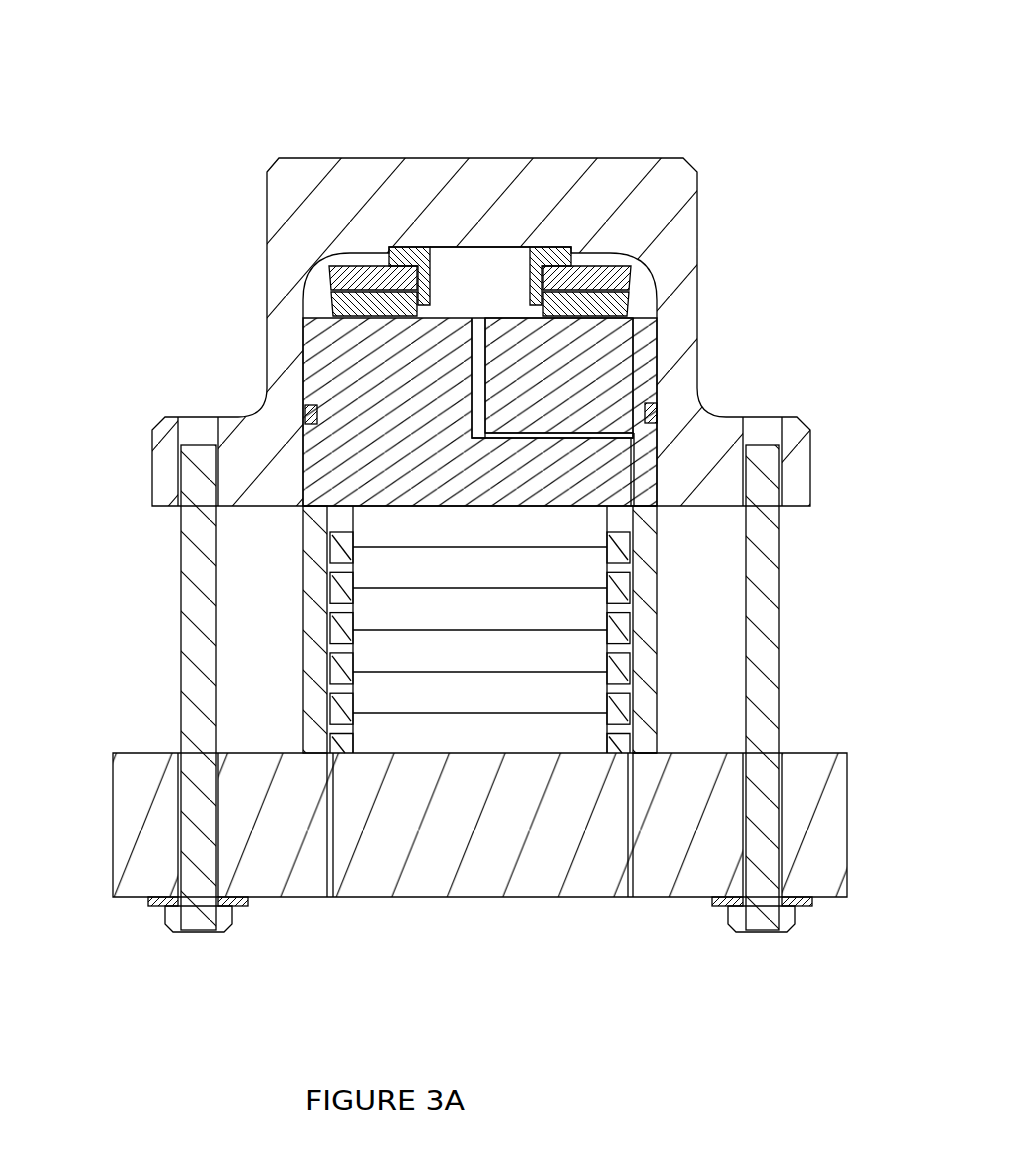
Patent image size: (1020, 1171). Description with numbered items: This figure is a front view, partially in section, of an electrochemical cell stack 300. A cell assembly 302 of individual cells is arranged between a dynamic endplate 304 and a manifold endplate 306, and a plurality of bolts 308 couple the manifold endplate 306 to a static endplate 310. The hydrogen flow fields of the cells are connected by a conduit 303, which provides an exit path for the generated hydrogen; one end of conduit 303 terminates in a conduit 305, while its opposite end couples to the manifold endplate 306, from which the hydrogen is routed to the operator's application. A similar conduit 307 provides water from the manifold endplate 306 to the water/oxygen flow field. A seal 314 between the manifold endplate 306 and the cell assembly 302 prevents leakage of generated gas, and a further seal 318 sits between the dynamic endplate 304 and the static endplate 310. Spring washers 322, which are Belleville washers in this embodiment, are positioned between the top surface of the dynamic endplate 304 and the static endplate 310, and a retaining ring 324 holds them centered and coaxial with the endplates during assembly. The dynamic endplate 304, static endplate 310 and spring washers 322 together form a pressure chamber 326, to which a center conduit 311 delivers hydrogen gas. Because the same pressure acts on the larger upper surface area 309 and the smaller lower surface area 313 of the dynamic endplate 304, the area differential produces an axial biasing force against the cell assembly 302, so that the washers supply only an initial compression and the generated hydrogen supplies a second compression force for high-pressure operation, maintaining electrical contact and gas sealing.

The electrochemical cell stack 300 is at (348, 128).
The cell assembly 302 is at (300, 688).
The conduit 303 is at (633, 638).
The dynamic endplate 304 is at (400, 415).
The conduit 305 is at (625, 437).
The manifold endplate 306 is at (435, 880).
The conduit 307 is at (325, 640).
The bolts 308 is at (233, 918).
The upper surface area 309 is at (503, 312).
The static endplate 310 is at (698, 312).
The center conduit 311 is at (473, 382).
The lower surface area 313 is at (527, 508).
The seal 314 is at (657, 753).
The seal 318 is at (240, 416).
The spring washers 322 is at (303, 309).
The retaining ring 324 is at (520, 248).
The pressure chamber 326 is at (467, 268).